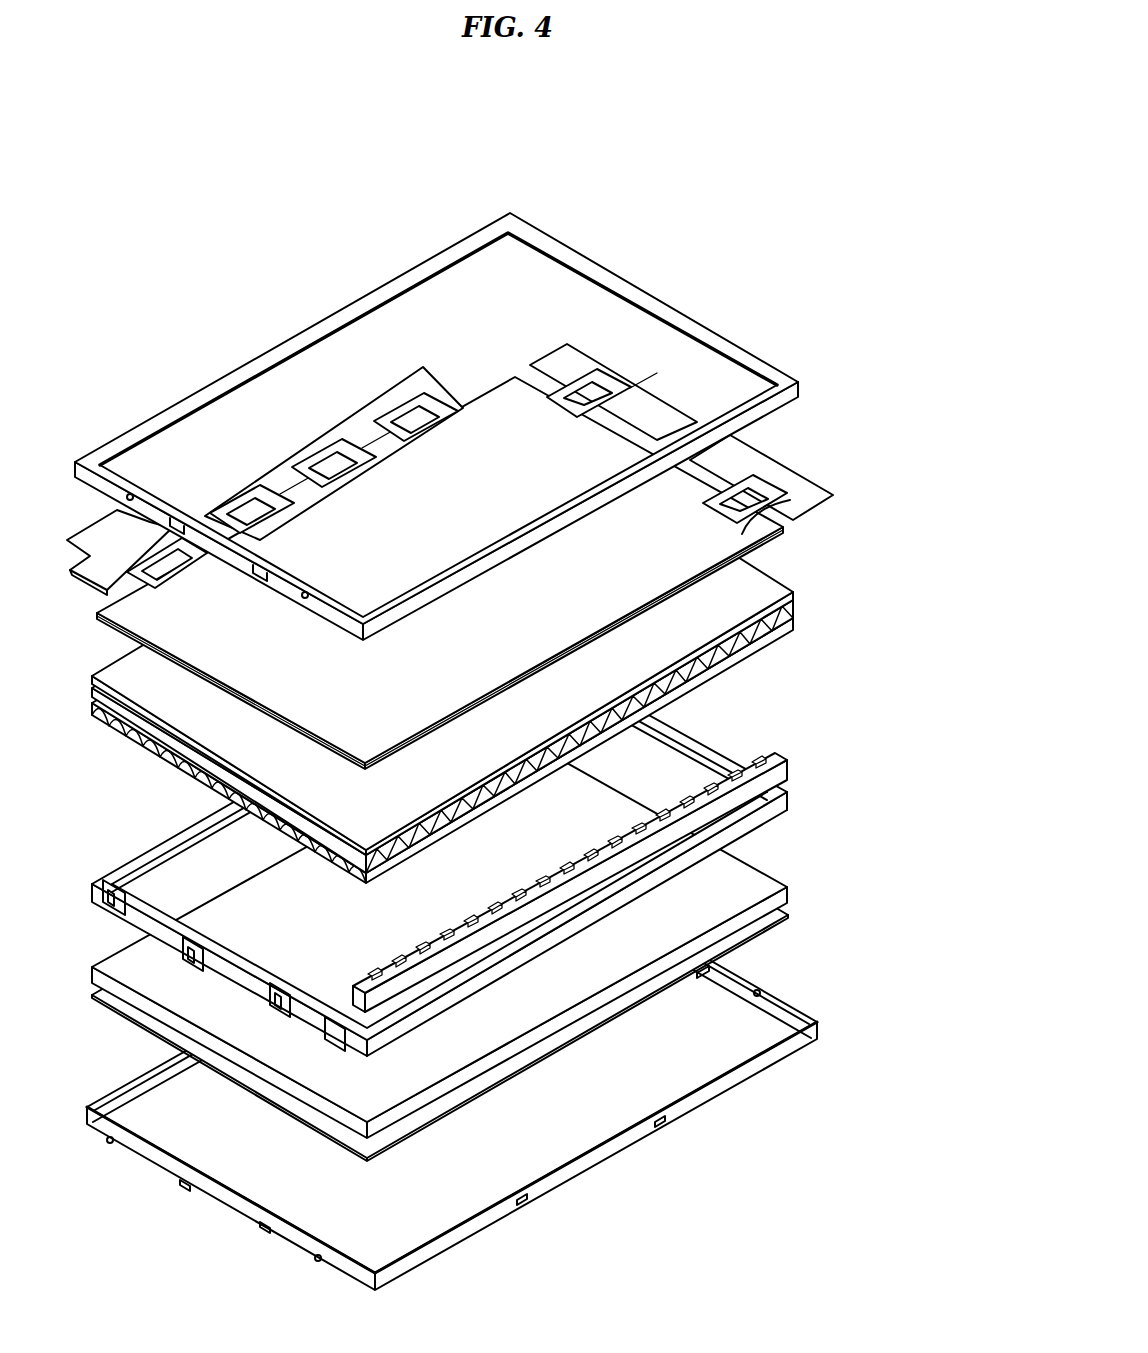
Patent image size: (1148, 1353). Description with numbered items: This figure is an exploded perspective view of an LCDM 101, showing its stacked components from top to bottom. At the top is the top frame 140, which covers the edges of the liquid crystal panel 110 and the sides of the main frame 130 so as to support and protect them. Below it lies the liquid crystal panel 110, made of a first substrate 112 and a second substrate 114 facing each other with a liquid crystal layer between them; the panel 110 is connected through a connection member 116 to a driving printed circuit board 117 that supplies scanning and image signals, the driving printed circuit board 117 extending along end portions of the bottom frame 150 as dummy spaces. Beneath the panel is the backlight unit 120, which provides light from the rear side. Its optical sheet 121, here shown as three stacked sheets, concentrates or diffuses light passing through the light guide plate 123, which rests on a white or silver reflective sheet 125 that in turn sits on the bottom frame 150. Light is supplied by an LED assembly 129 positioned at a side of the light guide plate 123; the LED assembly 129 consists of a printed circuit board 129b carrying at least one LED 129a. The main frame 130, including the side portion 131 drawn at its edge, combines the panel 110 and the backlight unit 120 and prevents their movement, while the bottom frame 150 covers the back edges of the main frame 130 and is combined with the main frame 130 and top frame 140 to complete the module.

The LCDM 101 is at (724, 123).
The liquid crystal panel 110 is at (498, 543).
The first substrate 112 is at (800, 515).
The second substrate 114 is at (742, 534).
The connection member 116 is at (553, 395).
The driving printed circuit board 117 is at (377, 405).
The backlight unit 120 is at (518, 789).
The optical sheet 121 is at (469, 650).
The light guide plate 123 is at (790, 888).
The reflective sheet 125 is at (790, 916).
The LED assembly 129 is at (607, 842).
The LED 129a is at (768, 758).
The printed circuit board 129b is at (782, 768).
The main frame 130 is at (480, 844).
The mold frame side wall 131 is at (792, 807).
The top frame 140 is at (788, 372).
The bottom frame 150 is at (611, 1150).